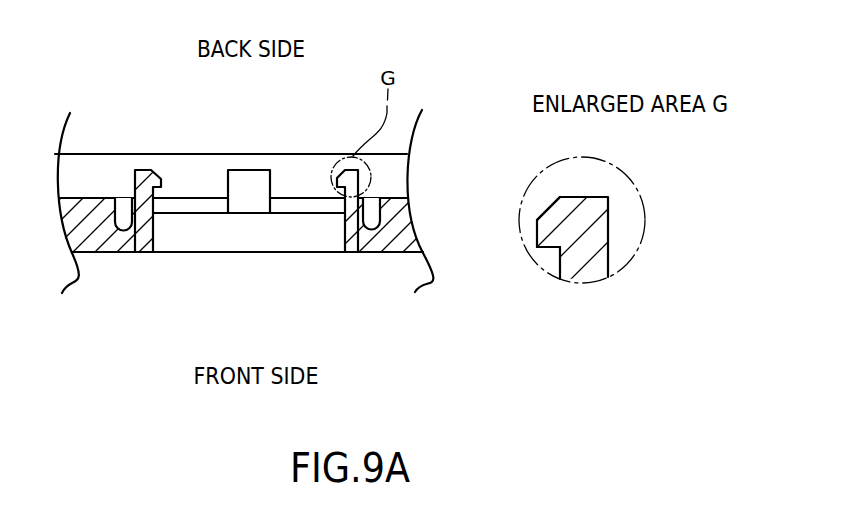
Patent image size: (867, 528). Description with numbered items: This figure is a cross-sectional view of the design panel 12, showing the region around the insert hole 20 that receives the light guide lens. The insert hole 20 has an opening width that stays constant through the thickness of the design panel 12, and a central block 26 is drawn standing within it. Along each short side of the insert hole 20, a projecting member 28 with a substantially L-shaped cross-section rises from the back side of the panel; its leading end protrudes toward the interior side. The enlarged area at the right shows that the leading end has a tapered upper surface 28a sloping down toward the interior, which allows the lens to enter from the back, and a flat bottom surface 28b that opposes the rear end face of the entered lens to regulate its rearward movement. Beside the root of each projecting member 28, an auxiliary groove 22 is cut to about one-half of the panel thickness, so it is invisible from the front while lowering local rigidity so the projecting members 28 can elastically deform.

The design panel 12 is at (103, 238).
The insert hole 20 is at (311, 240).
The auxiliary groove 22 is at (124, 210).
The electronic component 26 is at (252, 180).
The projecting member 28 is at (141, 170).
The upper surface 28a is at (542, 210).
The bottom surface 28b is at (552, 250).